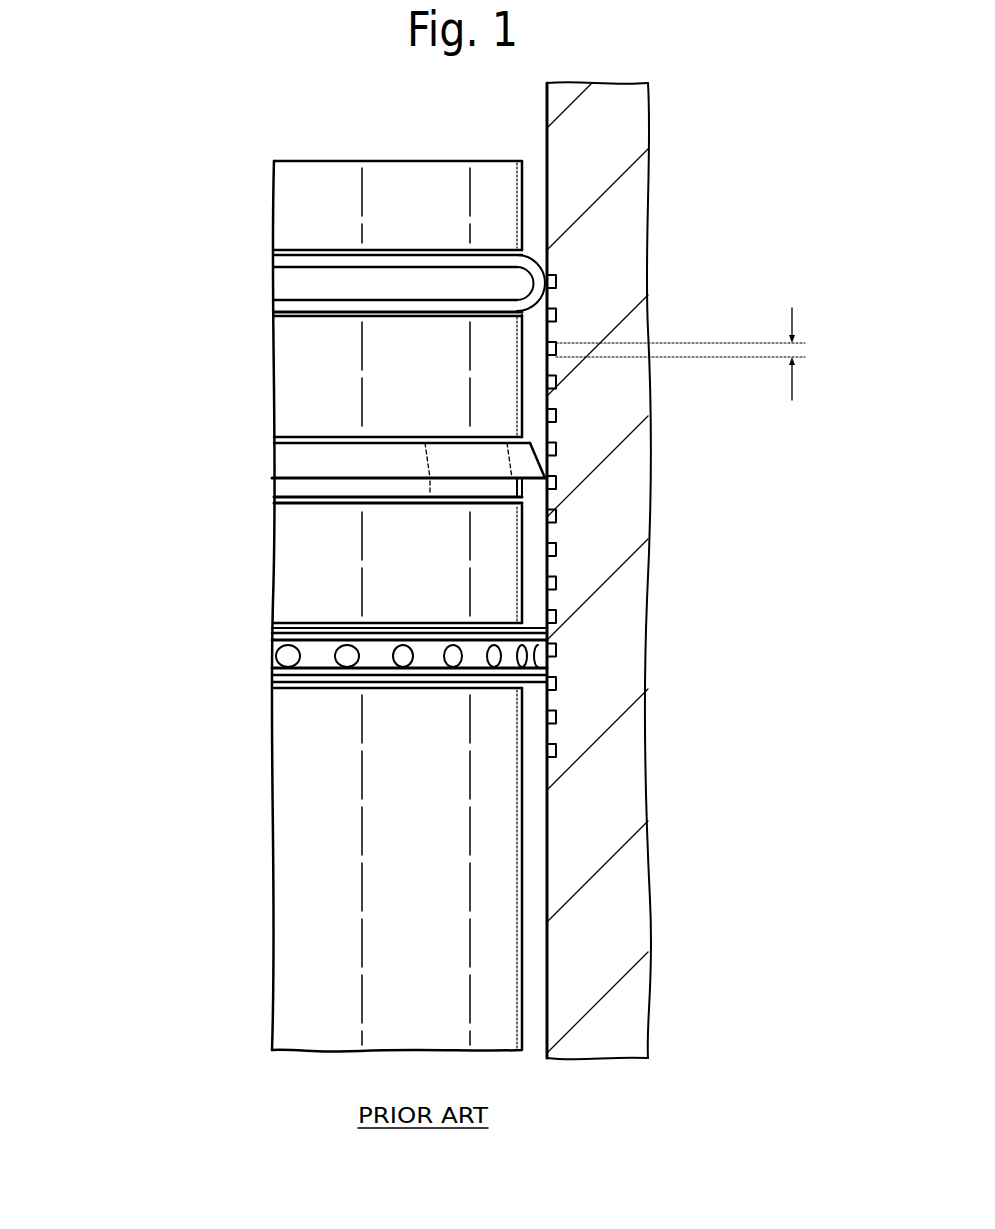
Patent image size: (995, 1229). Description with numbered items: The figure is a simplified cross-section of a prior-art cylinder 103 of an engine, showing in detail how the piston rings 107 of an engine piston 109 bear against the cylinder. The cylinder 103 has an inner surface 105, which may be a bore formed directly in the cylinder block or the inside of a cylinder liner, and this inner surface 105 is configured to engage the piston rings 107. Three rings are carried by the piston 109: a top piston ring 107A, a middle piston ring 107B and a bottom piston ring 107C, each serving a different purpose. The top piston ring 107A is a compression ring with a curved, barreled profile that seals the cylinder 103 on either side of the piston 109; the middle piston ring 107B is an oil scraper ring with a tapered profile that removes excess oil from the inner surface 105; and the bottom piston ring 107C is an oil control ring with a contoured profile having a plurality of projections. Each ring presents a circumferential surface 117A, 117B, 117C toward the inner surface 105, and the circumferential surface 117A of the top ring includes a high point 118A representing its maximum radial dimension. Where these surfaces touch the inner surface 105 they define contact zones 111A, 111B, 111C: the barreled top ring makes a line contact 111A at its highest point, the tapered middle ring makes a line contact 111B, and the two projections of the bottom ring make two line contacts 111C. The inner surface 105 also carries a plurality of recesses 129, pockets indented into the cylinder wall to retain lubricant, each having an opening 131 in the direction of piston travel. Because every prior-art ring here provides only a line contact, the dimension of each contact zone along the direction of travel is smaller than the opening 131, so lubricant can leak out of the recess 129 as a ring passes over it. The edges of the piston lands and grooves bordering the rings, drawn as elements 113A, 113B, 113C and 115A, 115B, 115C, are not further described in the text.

The cylinder 103 is at (338, 105).
The inner surface 105 is at (547, 140).
The piston rings 107 is at (168, 530).
The top piston ring 107A is at (457, 253).
The middle piston ring 107B is at (480, 455).
The bottom piston ring 107C is at (459, 637).
The engine piston 109 is at (288, 213).
The contact zone 111A is at (560, 285).
The contact zone 111B is at (560, 475).
The contact zones 111C is at (560, 640).
The upper panel edge 113A is at (432, 255).
The upper panel edge 113B is at (446, 442).
The upper panel edge 113C is at (446, 623).
The lower panel edge 115A is at (473, 316).
The lower panel edge 115B is at (470, 498).
The lower panel edge 115C is at (478, 684).
The circumferential surface 117A is at (477, 277).
The circumferential surface 117B is at (548, 458).
The circumferential surface 117C is at (548, 614).
The high point 118A is at (519, 257).
The recesses 129 is at (556, 588).
The opening 131 is at (793, 318).